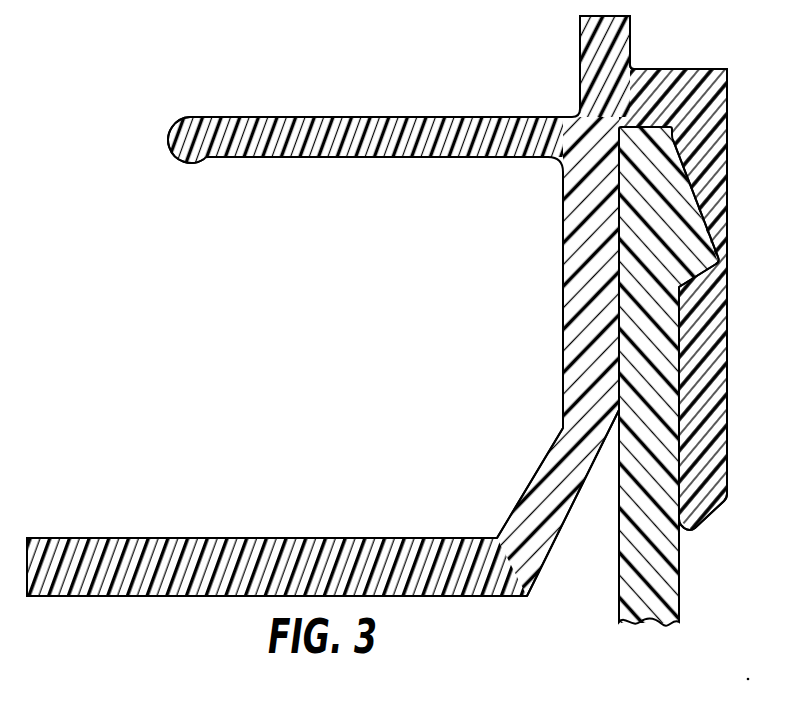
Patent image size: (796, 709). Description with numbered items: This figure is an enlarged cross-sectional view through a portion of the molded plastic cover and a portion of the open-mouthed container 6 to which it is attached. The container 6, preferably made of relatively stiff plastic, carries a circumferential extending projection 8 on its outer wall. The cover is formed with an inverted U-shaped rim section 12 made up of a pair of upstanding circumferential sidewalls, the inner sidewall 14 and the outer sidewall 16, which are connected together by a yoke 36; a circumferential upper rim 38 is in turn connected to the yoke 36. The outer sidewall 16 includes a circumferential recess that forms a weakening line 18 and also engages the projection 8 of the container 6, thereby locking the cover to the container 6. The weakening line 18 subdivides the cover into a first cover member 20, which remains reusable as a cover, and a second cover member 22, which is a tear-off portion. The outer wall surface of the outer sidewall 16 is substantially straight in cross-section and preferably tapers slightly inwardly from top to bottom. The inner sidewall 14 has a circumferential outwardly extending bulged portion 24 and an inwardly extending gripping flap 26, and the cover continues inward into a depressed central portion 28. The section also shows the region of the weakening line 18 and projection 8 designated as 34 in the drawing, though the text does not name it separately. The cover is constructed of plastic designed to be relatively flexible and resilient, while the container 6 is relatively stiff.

The open-mouthed container 6 is at (679, 563).
The circumferential extending projection 8 is at (723, 297).
The inverted U-shaped rim section 12 is at (681, 113).
The inner sidewall 14 is at (565, 273).
The outer sidewall 16 is at (728, 176).
The circumferential weakening line 18 is at (721, 262).
The first cover member 20 is at (727, 128).
The second cover member 22 is at (727, 418).
The bulged portion 24 is at (625, 350).
The gripping flap 26 is at (410, 118).
The depressed central portion 28 is at (272, 538).
The inclined cam surface of barb 34 is at (711, 244).
The yoke 36 is at (668, 84).
The circumferential upper rim 38 is at (622, 23).